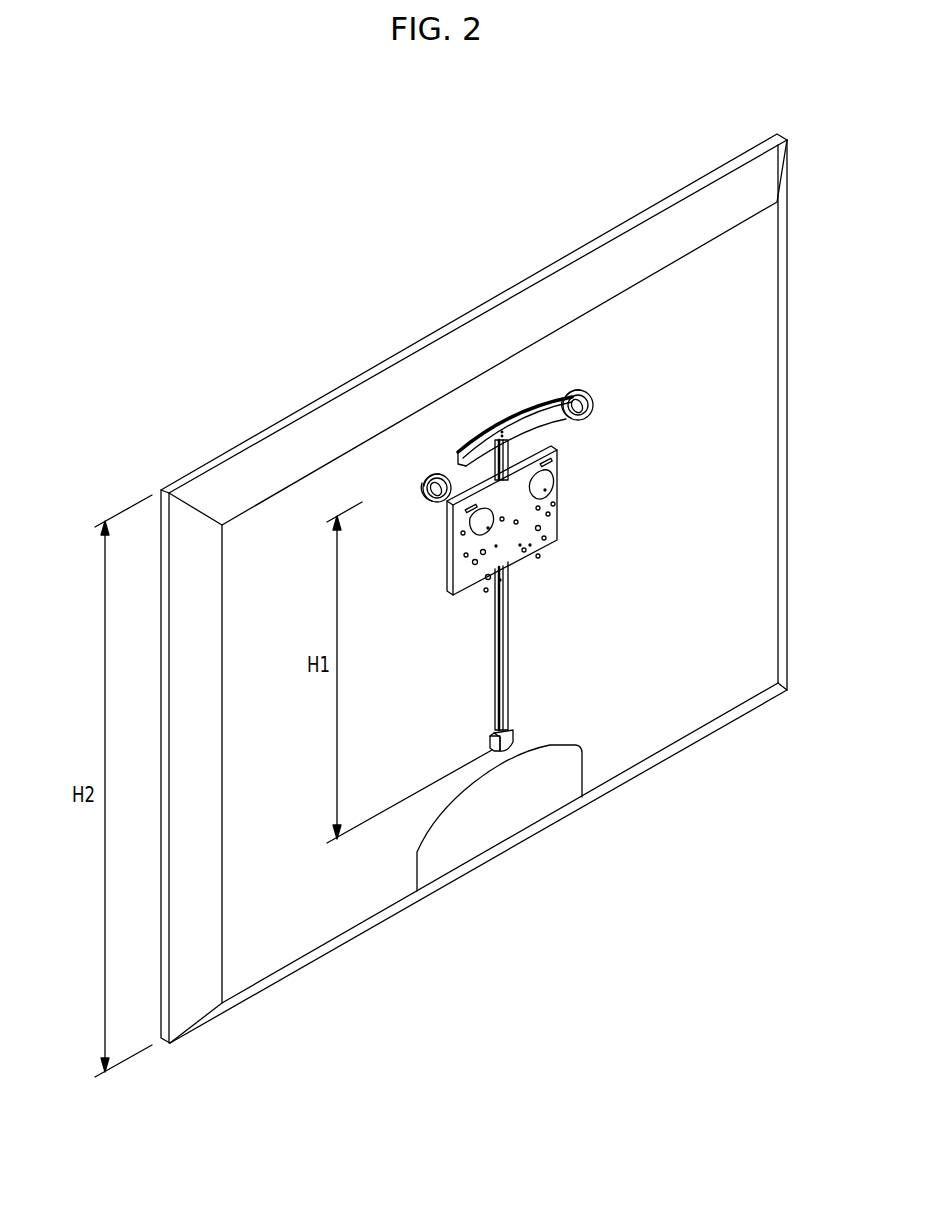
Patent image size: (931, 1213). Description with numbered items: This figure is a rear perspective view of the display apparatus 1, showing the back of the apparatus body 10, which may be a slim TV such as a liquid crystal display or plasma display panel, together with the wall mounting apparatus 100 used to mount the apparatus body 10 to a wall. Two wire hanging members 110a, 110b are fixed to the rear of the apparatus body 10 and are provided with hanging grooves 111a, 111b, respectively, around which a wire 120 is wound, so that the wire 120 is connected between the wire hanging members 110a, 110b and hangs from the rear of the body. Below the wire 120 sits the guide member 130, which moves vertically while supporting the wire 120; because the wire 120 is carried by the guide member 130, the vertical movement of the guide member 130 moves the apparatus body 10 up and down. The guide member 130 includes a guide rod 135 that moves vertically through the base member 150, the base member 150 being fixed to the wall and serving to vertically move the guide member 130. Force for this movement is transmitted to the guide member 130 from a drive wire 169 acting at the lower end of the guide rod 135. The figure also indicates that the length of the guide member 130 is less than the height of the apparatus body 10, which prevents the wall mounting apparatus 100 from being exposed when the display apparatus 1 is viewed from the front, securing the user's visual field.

The display apparatus 1 is at (404, 124).
The apparatus body 10 is at (345, 388).
The wall mounting apparatus 100 is at (606, 523).
The wire hanging member 110a is at (428, 501).
The wire hanging member 110b is at (592, 404).
The hanging groove 111a is at (432, 472).
The hanging groove 111b is at (572, 392).
The wire 120 is at (543, 410).
The guide member 130 is at (513, 603).
The guide rod 135 is at (504, 458).
The base member 150 is at (441, 580).
The drive wire 169 is at (497, 663).